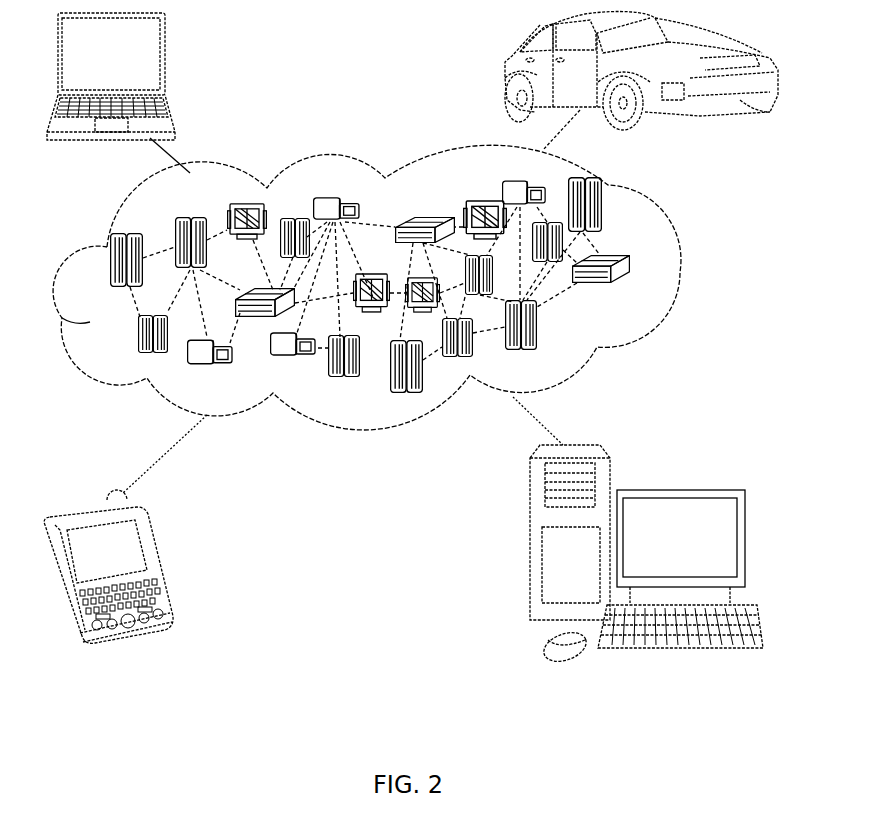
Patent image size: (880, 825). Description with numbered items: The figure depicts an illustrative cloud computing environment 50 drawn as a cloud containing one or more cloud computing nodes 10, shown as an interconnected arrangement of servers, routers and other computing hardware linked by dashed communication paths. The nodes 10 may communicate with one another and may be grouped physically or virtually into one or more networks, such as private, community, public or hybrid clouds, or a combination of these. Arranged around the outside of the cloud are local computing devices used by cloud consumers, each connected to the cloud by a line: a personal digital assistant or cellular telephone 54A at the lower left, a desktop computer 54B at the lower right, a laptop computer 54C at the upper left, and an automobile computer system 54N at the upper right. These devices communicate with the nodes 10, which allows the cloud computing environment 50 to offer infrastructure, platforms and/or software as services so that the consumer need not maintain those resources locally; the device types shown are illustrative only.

The cloud computing environment 50 is at (679, 270).
The cloud computing nodes 10 is at (642, 293).
The personal digital assistant (PDA) or cellular telephone 54A is at (156, 560).
The desktop computer 54B is at (675, 490).
The laptop computer 54C is at (166, 60).
The automobile computer system 54N is at (505, 72).